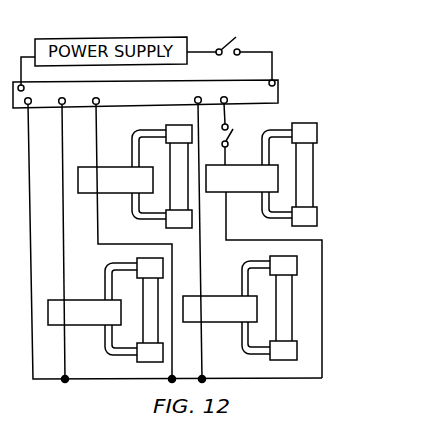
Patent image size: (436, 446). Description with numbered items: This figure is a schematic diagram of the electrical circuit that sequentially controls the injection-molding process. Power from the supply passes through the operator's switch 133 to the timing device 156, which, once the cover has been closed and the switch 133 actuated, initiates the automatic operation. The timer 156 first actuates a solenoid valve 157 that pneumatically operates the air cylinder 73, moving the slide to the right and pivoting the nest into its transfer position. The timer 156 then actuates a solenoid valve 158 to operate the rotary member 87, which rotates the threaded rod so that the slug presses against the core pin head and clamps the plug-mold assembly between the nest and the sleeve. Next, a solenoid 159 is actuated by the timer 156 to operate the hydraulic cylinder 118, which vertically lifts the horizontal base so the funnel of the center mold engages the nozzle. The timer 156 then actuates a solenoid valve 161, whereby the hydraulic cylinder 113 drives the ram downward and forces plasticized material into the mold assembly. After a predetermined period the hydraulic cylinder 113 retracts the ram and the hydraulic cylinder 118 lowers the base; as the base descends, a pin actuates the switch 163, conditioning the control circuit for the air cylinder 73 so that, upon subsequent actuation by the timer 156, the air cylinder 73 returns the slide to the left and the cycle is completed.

The switch 133 is at (218, 42).
The timing device 156 is at (278, 93).
The switch 163 is at (231, 136).
The solenoid 159 is at (130, 165).
The hydraulic cylinder 118 is at (173, 163).
The solenoid valve 157 is at (236, 193).
The air cylinder 73 is at (313, 170).
The solenoid valve 161 is at (90, 288).
The hydraulic cylinder 113 is at (142, 297).
The solenoid valve 158 is at (230, 284).
The rotary member 87 is at (292, 292).